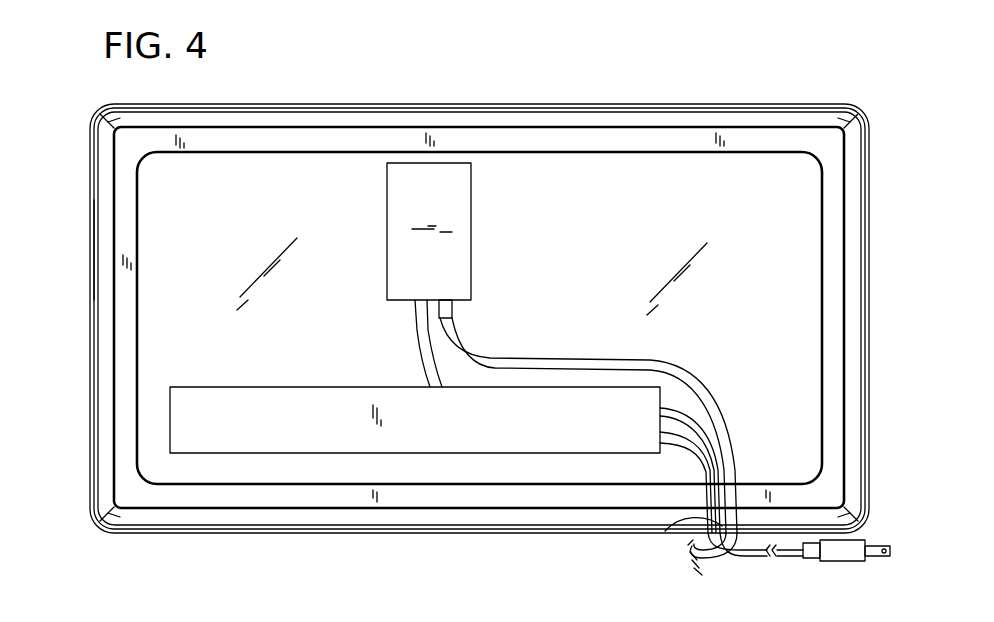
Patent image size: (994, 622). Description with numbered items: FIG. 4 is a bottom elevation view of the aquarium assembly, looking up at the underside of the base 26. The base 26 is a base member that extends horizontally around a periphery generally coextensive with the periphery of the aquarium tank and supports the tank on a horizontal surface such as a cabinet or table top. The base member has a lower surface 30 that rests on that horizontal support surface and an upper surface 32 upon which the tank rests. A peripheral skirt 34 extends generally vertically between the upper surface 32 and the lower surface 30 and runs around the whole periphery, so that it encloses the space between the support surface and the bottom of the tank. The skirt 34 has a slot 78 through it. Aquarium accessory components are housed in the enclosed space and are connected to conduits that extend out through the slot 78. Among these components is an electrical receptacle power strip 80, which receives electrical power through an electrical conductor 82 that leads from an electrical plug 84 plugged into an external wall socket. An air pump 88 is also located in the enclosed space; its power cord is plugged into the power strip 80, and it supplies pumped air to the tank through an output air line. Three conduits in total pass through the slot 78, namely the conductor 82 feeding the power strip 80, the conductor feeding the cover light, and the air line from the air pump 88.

The base 26 is at (112, 190).
The lower surface 30 is at (90, 323).
The upper surface 32 is at (139, 196).
The peripheral skirt 34 is at (106, 250).
The slot 78 is at (673, 533).
The electrical receptacle power strip 80 is at (290, 397).
The electrical conductor 82 is at (755, 556).
The electrical plug 84 is at (838, 557).
The air pump 88 is at (396, 257).